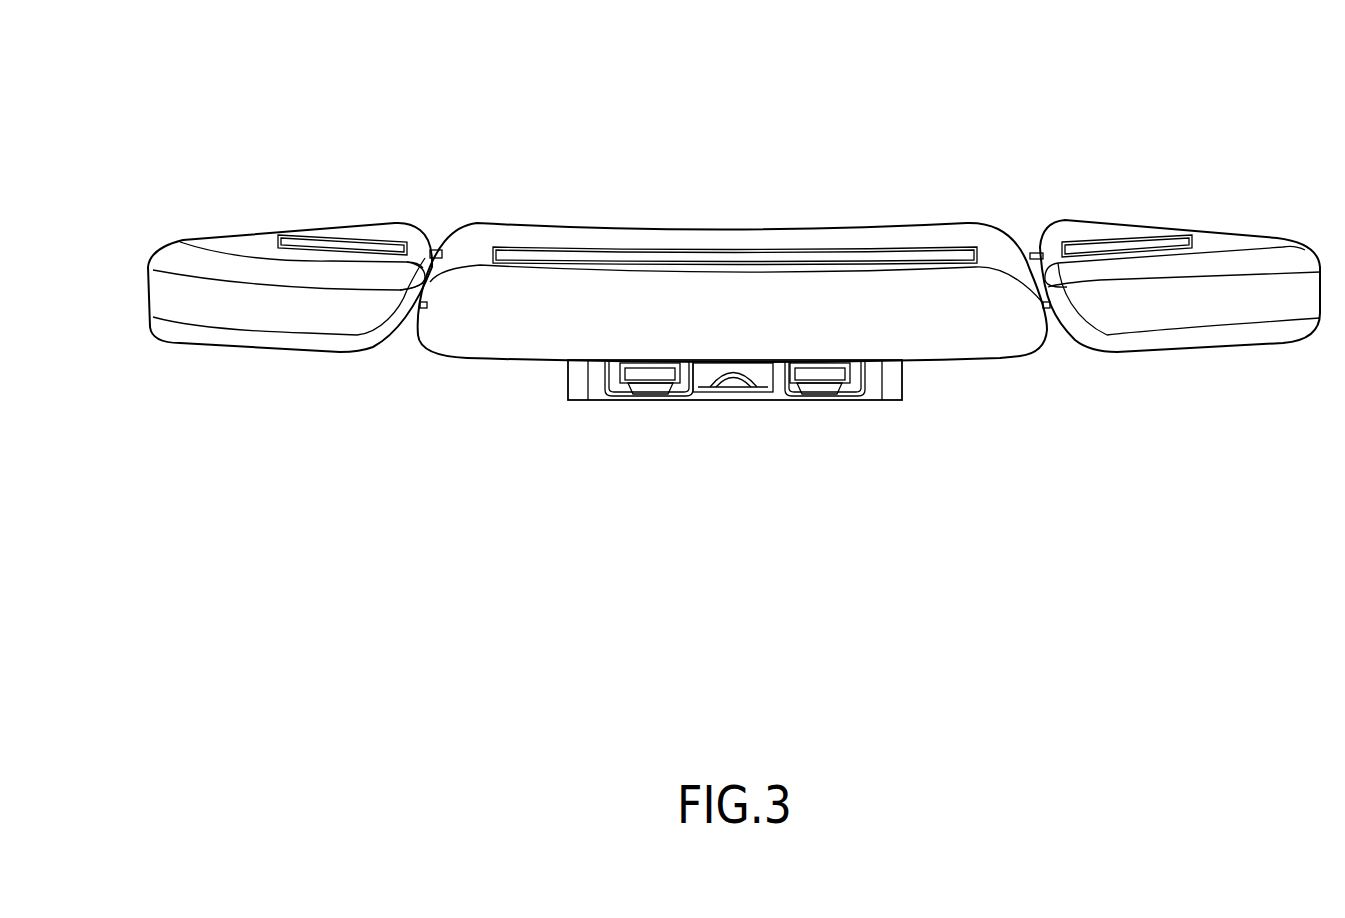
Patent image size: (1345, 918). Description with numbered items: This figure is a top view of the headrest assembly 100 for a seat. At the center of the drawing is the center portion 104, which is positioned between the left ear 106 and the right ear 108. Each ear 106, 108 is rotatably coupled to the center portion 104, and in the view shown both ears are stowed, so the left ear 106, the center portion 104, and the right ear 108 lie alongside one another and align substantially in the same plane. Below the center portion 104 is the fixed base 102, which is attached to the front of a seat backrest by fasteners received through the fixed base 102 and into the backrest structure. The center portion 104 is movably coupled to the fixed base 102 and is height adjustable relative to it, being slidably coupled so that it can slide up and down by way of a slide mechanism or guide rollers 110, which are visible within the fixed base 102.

The headrest assembly 100 is at (254, 78).
The fixed base 102 is at (580, 387).
The center portion 104 is at (738, 237).
The left ear 106 is at (243, 238).
The right ear 108 is at (1233, 240).
The guide rollers 110 is at (825, 377).